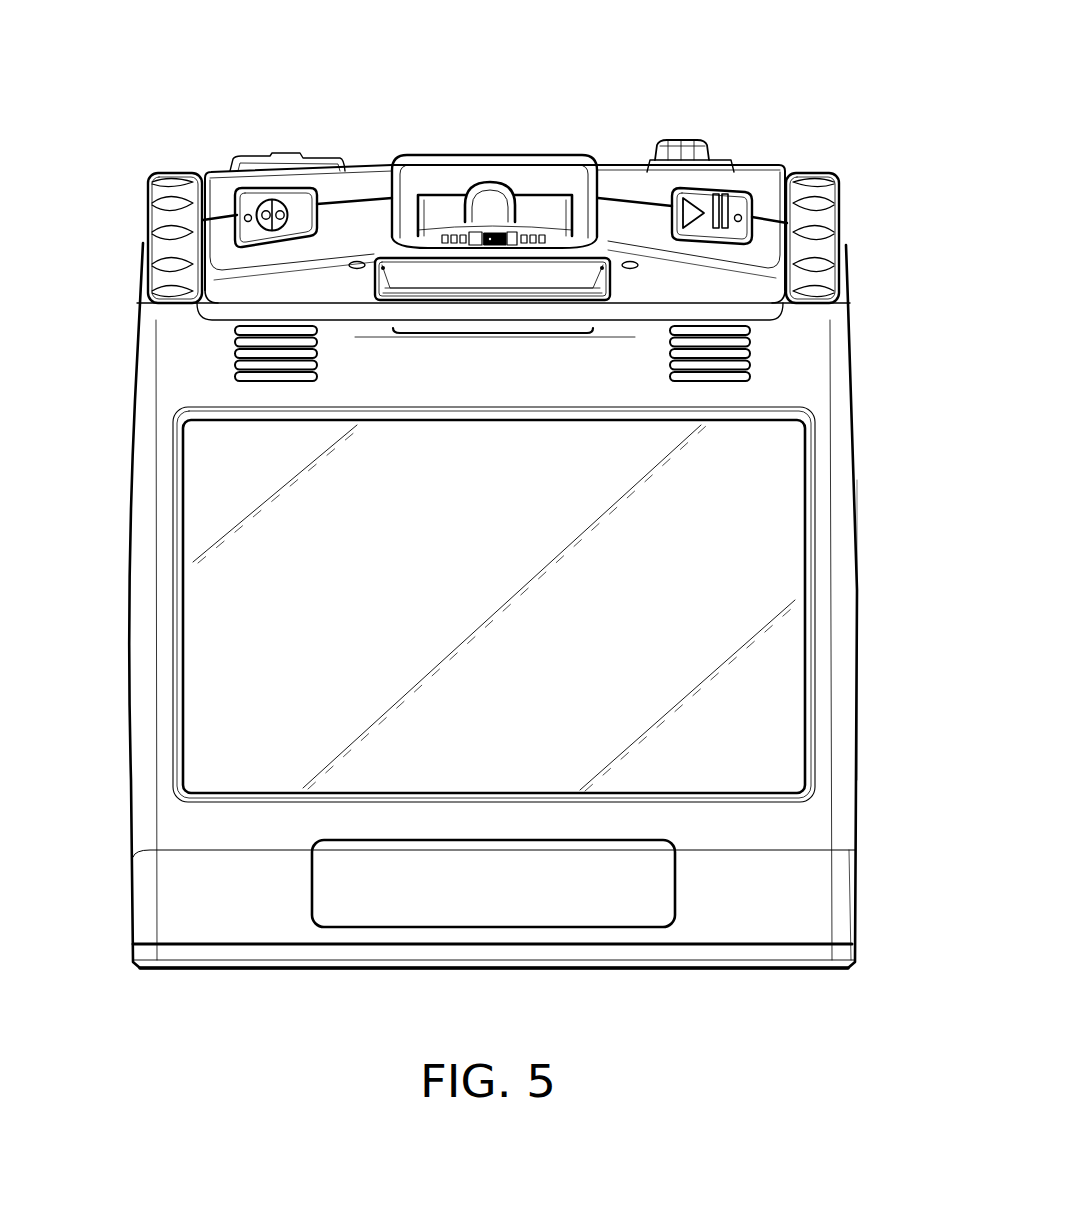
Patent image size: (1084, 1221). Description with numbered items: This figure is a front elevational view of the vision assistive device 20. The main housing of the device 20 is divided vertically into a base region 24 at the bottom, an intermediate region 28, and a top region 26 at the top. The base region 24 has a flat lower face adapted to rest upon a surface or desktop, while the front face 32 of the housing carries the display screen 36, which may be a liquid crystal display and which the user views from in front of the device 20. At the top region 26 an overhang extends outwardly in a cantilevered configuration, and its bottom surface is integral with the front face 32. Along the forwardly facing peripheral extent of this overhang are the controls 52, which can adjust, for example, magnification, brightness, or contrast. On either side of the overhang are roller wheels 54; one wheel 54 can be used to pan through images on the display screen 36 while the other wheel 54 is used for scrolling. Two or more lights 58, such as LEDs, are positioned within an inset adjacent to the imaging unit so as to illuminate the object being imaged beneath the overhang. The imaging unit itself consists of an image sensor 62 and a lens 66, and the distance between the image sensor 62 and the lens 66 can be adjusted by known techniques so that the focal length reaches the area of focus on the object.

The device 20 is at (501, 485).
The base region 24 is at (853, 931).
The top region 26 is at (850, 320).
The intermediate region 28 is at (858, 628).
The front face 32 is at (820, 834).
The display screen 36 is at (507, 559).
The controls 52 is at (297, 207).
The roller wheels 54 is at (148, 240).
The lights 58 is at (577, 283).
The image sensor 62 is at (487, 245).
The lens 66 is at (512, 245).